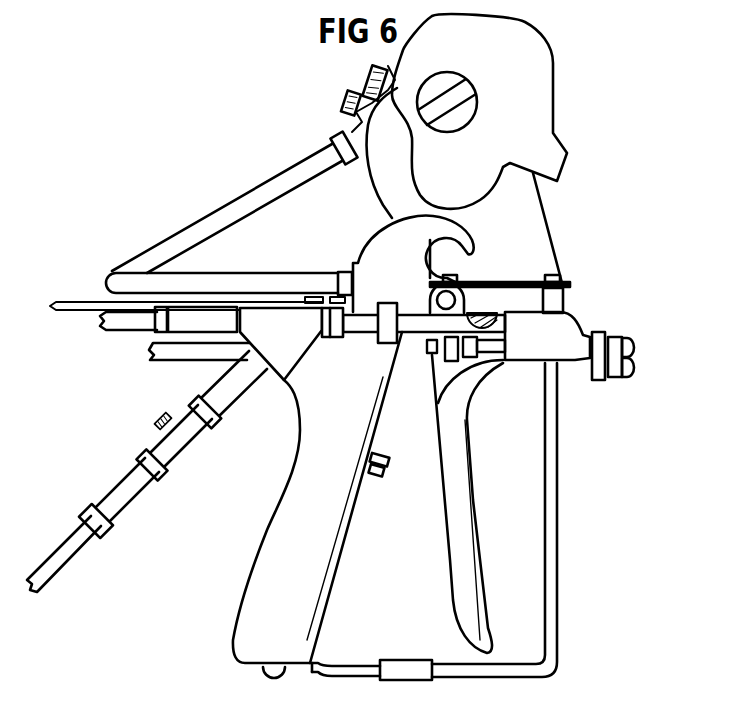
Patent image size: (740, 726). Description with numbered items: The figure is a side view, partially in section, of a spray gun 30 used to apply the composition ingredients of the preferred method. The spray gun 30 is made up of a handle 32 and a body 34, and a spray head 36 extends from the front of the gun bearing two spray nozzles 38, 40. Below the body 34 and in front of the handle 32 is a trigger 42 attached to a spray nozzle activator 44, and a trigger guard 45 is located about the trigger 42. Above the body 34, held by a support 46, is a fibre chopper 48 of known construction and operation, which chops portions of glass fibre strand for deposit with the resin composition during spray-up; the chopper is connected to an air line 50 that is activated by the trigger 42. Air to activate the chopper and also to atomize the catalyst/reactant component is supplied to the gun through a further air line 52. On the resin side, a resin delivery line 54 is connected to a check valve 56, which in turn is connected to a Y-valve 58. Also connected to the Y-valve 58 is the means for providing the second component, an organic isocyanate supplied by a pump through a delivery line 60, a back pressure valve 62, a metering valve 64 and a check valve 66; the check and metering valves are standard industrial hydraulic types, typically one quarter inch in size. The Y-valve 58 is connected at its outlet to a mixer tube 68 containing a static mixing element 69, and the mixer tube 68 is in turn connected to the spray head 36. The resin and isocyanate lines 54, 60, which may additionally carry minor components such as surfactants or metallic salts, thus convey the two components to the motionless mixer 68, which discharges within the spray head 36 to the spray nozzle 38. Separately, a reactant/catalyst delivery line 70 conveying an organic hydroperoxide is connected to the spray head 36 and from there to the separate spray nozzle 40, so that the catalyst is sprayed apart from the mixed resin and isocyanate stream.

The spray gun 30 is at (602, 202).
The handle 32 is at (273, 541).
The body 34 is at (388, 263).
The spray head 36 is at (548, 348).
The spray nozzle 38 is at (630, 347).
The spray nozzle 40 is at (627, 363).
The trigger 42 is at (455, 530).
The spray nozzle activator 44 is at (483, 348).
The trigger guard 45 is at (550, 530).
The support 46 is at (524, 250).
The fibre chopper 48 is at (523, 101).
The air line 50 is at (243, 208).
The air line 52 is at (154, 352).
The resin delivery line 54 is at (122, 320).
The check valve 56 is at (208, 324).
The Y-valve 58 is at (290, 340).
The delivery line 60 is at (60, 550).
The back pressure valve 62 is at (122, 492).
The metering valve 64 is at (168, 448).
The check valve 66 is at (218, 392).
The mixer tube 68 is at (418, 323).
The static mixing element 69 is at (481, 313).
The reactant/catalyst delivery line 70 is at (80, 309).